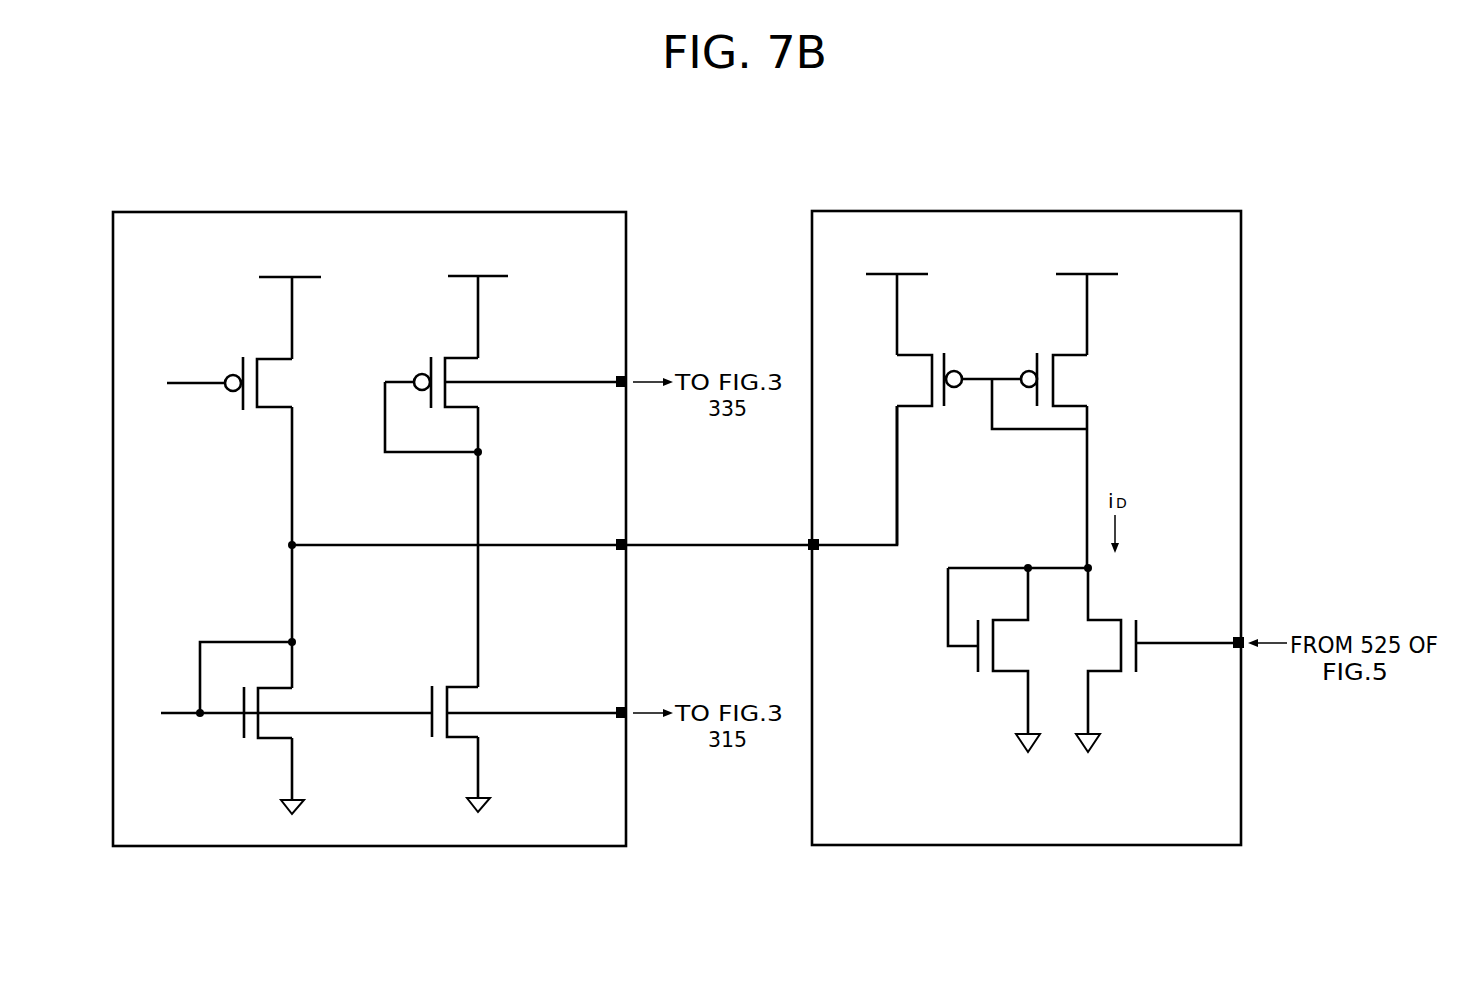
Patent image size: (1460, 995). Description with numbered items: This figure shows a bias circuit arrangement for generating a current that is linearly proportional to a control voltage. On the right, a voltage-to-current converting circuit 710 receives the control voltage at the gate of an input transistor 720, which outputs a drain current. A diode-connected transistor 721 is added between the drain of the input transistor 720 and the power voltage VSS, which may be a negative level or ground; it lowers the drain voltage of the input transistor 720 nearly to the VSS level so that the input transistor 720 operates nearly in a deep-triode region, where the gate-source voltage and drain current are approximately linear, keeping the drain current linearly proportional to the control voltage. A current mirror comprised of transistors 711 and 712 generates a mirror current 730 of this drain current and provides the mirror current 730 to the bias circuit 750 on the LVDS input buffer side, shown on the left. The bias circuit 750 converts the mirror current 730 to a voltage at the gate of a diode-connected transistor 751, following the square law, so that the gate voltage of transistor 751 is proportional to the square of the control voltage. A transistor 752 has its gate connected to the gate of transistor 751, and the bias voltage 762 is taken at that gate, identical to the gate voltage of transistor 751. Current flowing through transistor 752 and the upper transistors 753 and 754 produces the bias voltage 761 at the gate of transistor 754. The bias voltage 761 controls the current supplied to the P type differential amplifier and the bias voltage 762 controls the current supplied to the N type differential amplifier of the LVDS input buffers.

The bias circuit 750 is at (580, 211).
The voltage-to-current converting circuit 710 is at (1194, 210).
The transistor 753 is at (266, 338).
The transistor 754 is at (455, 338).
The diode-connected transistor 751 is at (268, 755).
The transistor 752 is at (457, 757).
The bias voltage 761 is at (572, 386).
The bias voltage 762 is at (575, 716).
The mirror current 730 is at (857, 551).
The transistor 712 is at (907, 337).
The transistor 711 is at (1080, 337).
The input transistor 720 is at (1105, 600).
The diode-connected transistor 721 is at (1003, 690).